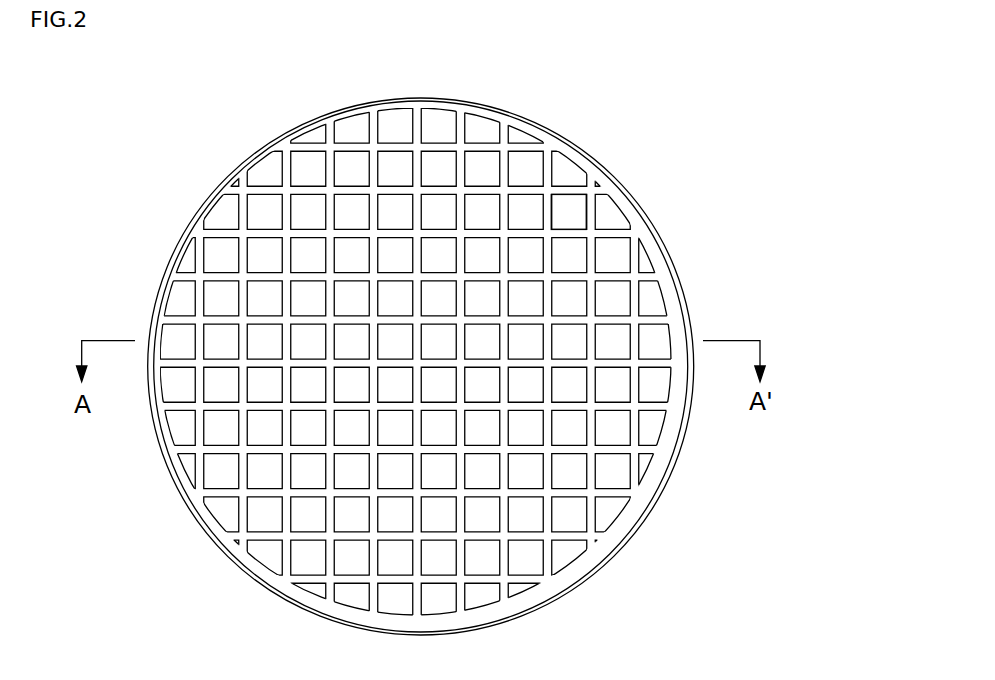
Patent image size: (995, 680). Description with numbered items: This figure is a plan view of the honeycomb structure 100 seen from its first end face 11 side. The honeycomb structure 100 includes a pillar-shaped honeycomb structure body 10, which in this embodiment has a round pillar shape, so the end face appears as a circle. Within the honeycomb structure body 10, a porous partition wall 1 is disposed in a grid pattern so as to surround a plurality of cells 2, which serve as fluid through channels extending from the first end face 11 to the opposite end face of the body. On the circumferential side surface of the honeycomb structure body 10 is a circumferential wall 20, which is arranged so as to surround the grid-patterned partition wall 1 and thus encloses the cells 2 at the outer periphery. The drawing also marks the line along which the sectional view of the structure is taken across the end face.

The honeycomb structure 100 is at (752, 63).
The partition wall 1 is at (522, 192).
The cells 2 is at (567, 210).
The honeycomb structure body 10 is at (697, 310).
The first end face 11 is at (228, 152).
The circumferential wall 20 is at (632, 525).